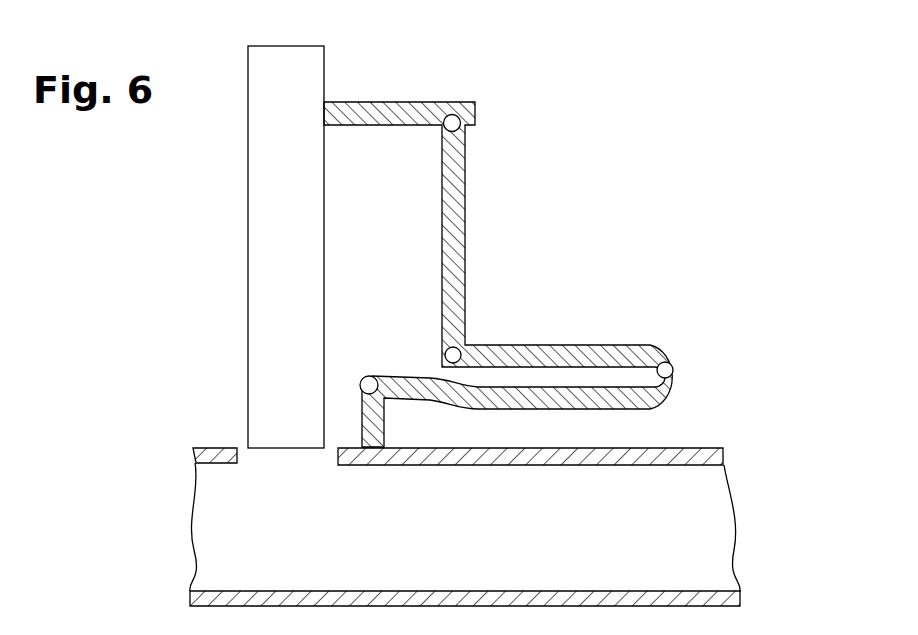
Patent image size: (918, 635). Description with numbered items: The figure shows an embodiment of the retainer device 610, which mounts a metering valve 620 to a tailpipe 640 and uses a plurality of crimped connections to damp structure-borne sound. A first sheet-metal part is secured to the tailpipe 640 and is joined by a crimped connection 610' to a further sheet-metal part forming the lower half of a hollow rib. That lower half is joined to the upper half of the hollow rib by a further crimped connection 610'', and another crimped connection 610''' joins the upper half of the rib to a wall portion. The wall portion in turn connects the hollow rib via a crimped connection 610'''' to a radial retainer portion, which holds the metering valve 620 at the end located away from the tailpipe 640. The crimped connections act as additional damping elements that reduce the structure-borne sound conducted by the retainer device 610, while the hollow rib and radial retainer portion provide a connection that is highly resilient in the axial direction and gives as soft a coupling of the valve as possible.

The retainer device 610 is at (498, 274).
The crimped connection 610' is at (376, 343).
The crimped connection 610'' is at (715, 361).
The crimped connection 610''' is at (507, 324).
The crimped connection 610'''' is at (519, 139).
The metering valve 620 is at (307, 82).
The tailpipe 640 is at (710, 437).